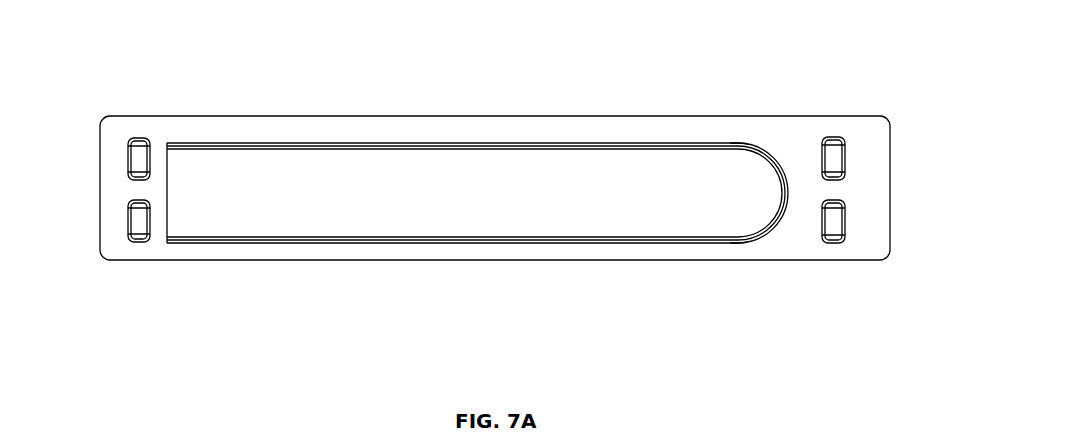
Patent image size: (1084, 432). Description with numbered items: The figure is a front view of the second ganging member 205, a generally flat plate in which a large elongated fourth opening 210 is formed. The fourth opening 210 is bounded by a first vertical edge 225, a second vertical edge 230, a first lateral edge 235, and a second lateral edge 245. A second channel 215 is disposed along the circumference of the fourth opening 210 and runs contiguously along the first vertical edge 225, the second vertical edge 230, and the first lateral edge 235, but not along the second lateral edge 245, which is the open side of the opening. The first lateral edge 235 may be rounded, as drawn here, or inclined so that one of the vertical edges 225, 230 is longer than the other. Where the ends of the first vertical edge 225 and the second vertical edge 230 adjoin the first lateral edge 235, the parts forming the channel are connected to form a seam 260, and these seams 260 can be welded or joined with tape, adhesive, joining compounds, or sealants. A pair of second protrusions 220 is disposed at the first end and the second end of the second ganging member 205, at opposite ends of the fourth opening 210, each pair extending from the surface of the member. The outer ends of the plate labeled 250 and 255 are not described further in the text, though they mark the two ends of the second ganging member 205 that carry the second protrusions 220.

The second ganging member 205 is at (795, 115).
The fourth opening 210 is at (466, 215).
The second channel 215 is at (493, 143).
The pair of second protrusions 220 is at (842, 220).
The first vertical edge 225 is at (593, 145).
The second vertical edge 230 is at (613, 238).
The first lateral edge 235 is at (772, 227).
The second lateral edge 245 is at (165, 228).
The right end of plate 250 is at (892, 143).
The left end of plate 255 is at (100, 250).
The seam 260 is at (737, 145).